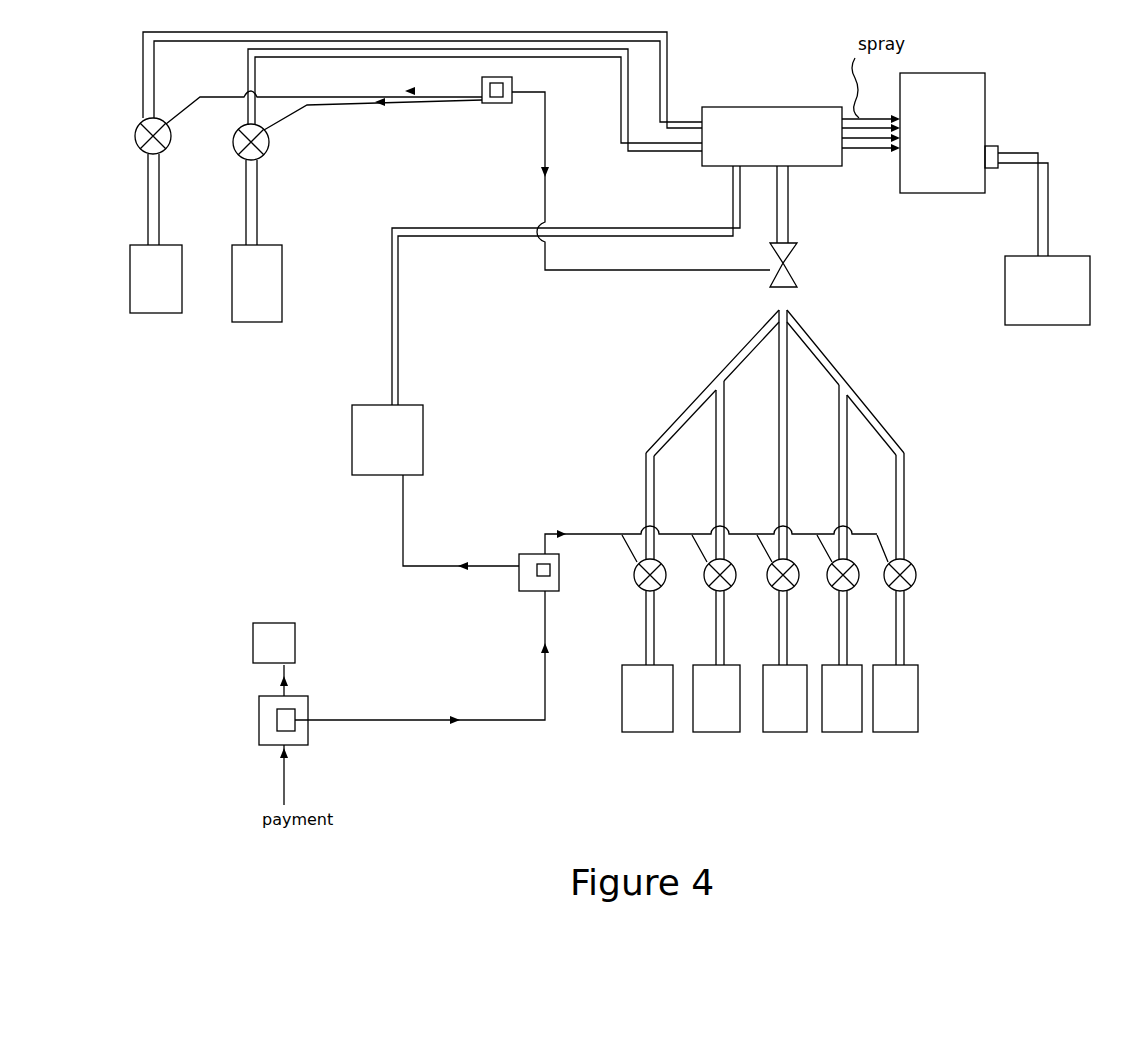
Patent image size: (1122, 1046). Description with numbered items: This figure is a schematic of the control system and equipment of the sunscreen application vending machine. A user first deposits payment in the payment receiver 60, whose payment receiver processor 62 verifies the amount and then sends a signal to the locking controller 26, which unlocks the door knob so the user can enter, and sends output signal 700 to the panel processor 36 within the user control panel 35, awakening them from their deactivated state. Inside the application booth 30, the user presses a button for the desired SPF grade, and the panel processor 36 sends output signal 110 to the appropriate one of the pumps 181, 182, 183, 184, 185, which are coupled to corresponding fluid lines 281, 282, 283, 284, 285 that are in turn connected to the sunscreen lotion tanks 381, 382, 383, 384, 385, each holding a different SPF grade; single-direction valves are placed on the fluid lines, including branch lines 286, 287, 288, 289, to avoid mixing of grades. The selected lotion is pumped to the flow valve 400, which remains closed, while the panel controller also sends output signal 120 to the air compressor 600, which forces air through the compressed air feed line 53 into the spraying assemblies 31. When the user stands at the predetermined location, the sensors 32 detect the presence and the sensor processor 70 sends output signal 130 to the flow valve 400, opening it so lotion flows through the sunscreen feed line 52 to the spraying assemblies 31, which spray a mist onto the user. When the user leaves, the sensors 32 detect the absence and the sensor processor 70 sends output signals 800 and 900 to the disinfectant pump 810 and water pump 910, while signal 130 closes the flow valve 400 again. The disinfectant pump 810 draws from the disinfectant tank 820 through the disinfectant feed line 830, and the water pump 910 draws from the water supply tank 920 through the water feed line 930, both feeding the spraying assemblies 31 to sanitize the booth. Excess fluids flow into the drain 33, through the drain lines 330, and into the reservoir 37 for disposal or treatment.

The locking controller 26 is at (246, 662).
The application booth 30 is at (986, 74).
The spraying assemblies 31 is at (702, 166).
The sensors 32 is at (482, 105).
The drain 33 is at (1000, 145).
The user control panel 35 is at (532, 594).
The panel processor 36 is at (546, 594).
The reservoir 37 is at (1060, 325).
The sunscreen feed line 52 is at (790, 216).
The compressed air feed line 53 is at (392, 254).
The payment receiver 60 is at (254, 746).
The payment receiver processor 62 is at (298, 736).
The sensor processor 70 is at (495, 103).
The output signal 110 is at (562, 536).
The output signal 120 is at (474, 569).
The output signal 130 is at (545, 164).
The pump 181 is at (638, 588).
The pump 182 is at (708, 586).
The pump 183 is at (773, 586).
The pump 184 is at (835, 588).
The pump 185 is at (892, 588).
The fluid line 281 is at (646, 493).
The fluid line 282 is at (716, 468).
The fluid line 283 is at (779, 463).
The fluid line 284 is at (839, 468).
The fluid line 285 is at (904, 477).
The fluid line 286 is at (686, 410).
The fluid line 287 is at (745, 348).
The fluid line 288 is at (880, 428).
The fluid line 289 is at (823, 358).
The drain lines 330 is at (1049, 159).
The sunscreen lotion tank 381 is at (622, 716).
The sunscreen lotion tank 382 is at (713, 722).
The sunscreen lotion tank 383 is at (789, 722).
The sunscreen lotion tank 384 is at (847, 722).
The sunscreen lotion tank 385 is at (903, 724).
The flow valve 400 is at (798, 269).
The air compressor 600 is at (353, 475).
The output signal 700 is at (495, 720).
The output signal 800 is at (386, 104).
The disinfectant pump 810 is at (272, 150).
The disinfectant tank 820 is at (253, 318).
The disinfectant feed line 830 is at (249, 76).
The output signal 900 is at (424, 92).
The water pump 910 is at (143, 150).
The water supply tank 920 is at (137, 306).
The water feed line 930 is at (143, 72).